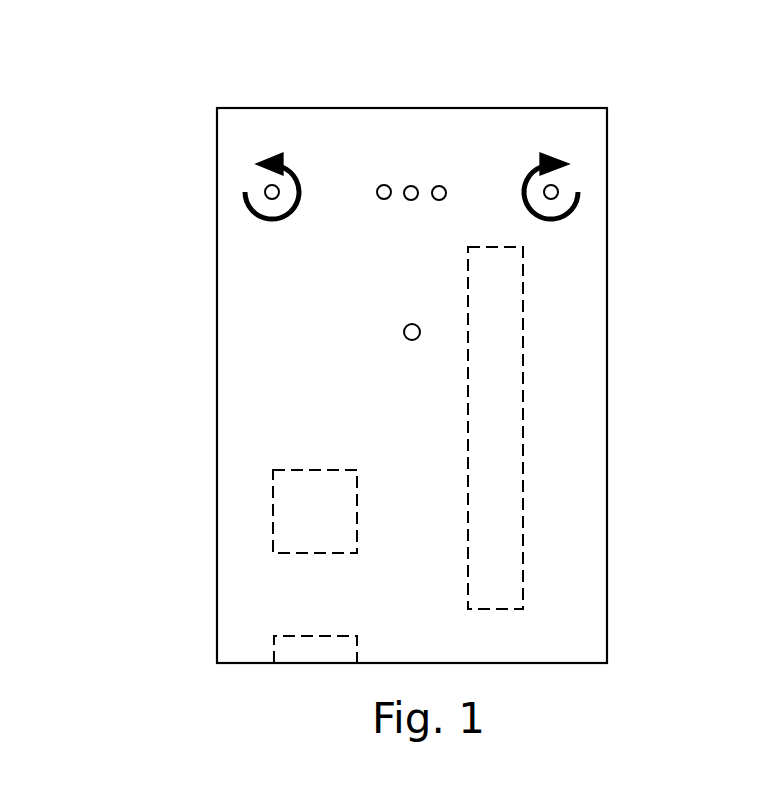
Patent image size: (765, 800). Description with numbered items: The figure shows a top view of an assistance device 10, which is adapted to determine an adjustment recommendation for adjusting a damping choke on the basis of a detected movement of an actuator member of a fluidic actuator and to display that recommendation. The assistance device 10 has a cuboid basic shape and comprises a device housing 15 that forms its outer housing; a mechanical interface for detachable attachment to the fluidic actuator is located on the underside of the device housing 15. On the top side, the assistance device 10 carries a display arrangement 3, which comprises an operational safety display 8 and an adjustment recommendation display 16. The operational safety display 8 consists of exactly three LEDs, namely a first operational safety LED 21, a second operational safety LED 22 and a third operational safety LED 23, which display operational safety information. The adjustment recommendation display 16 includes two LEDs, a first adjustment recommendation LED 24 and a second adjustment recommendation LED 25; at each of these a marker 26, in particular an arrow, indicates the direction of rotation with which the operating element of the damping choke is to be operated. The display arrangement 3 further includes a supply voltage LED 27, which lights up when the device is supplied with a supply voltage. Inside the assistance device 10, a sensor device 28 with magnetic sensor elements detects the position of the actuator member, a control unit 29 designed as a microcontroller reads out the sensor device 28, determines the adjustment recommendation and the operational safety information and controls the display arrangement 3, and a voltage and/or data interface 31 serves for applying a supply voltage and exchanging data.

The assistance device 10 is at (132, 77).
The device housing 15 is at (607, 353).
The display arrangement 3 is at (413, 194).
The adjustment recommendation display 16 is at (413, 165).
The operational safety display 8 is at (415, 143).
The first operational safety LED 21 is at (442, 186).
The second operational safety LED 22 is at (411, 200).
The third operational safety LED 23 is at (381, 186).
The first adjustment recommendation LED 24 is at (559, 189).
The second adjustment recommendation LED 25 is at (265, 188).
The marker 26 is at (263, 220).
The supply voltage LED 27 is at (403, 327).
The sensor device 28 is at (508, 441).
The control unit 29 is at (328, 527).
The voltage and/or data interface 31 is at (300, 661).